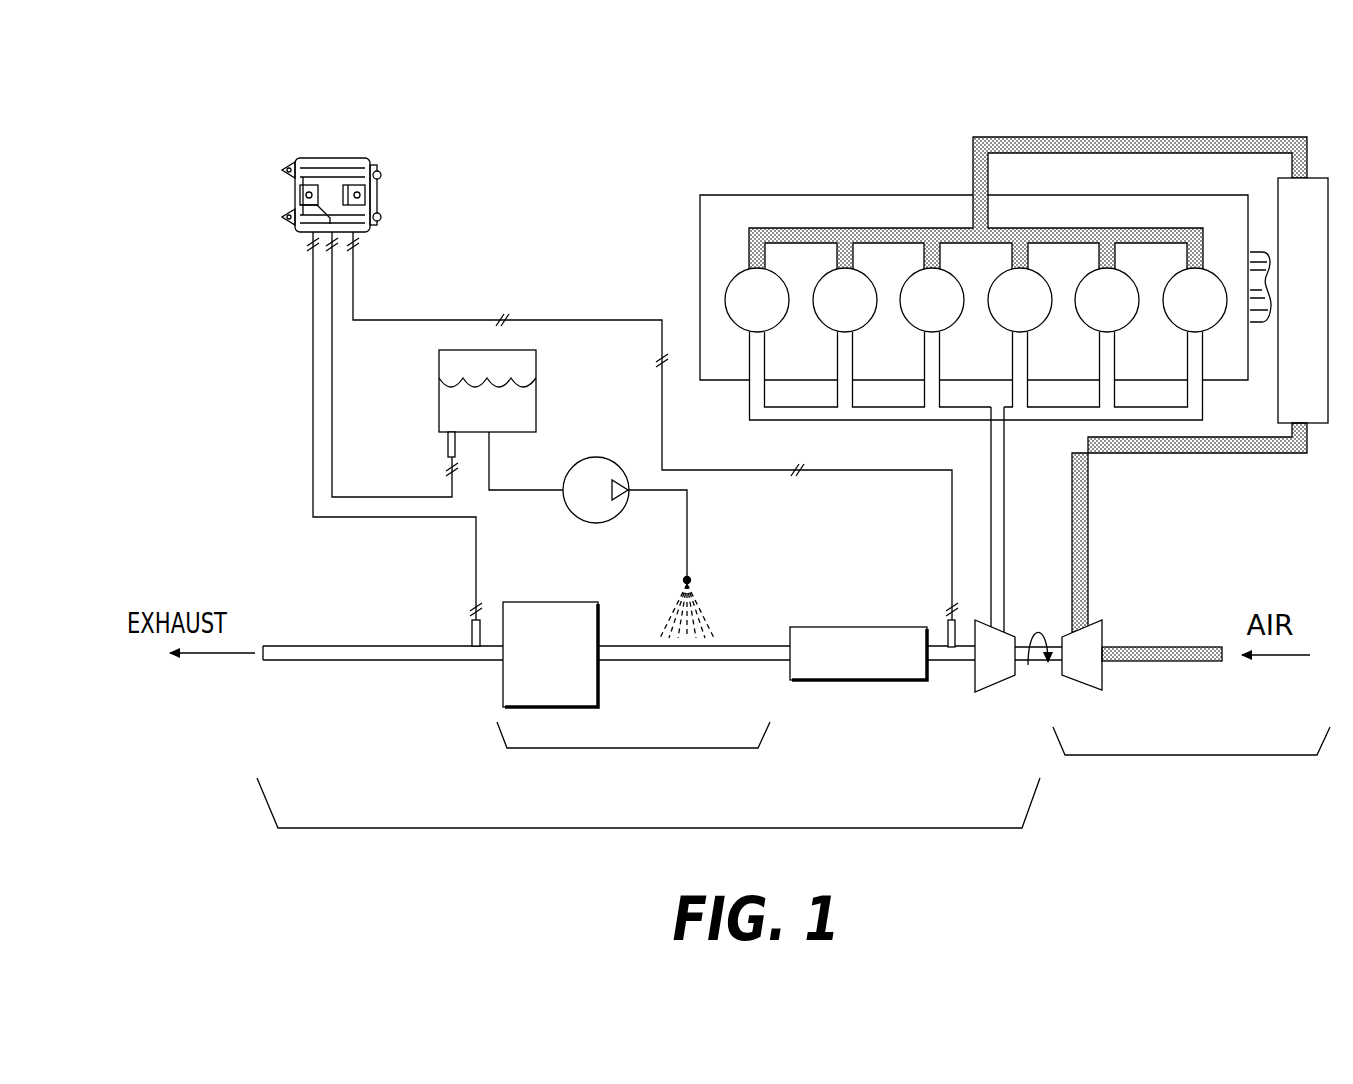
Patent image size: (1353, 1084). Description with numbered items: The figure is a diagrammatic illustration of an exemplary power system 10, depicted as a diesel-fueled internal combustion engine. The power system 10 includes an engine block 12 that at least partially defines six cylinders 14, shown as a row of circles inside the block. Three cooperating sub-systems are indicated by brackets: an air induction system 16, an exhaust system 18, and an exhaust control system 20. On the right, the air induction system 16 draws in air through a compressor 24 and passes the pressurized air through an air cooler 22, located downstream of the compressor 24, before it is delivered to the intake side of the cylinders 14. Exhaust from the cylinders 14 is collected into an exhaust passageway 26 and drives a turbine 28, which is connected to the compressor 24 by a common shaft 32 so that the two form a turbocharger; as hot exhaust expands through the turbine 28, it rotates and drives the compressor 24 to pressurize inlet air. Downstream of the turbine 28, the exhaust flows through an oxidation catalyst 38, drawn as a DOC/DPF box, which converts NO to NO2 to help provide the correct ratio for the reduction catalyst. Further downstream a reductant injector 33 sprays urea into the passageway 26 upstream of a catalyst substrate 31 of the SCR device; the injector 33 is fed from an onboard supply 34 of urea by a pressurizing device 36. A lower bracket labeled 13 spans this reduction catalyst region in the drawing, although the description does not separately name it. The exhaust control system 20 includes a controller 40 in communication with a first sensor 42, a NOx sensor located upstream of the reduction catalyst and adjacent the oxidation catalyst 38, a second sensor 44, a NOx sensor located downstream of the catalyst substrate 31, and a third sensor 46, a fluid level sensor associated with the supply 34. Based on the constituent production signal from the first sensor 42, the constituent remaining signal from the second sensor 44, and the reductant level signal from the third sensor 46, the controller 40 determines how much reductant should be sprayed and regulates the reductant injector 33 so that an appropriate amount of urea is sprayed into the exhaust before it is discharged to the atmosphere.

The power system 10 is at (225, 131).
The engine block 12 is at (765, 195).
The aftertreatment system 13 is at (653, 750).
The cylinders 14 is at (1206, 313).
The air induction system 16 is at (1213, 757).
The exhaust system 18 is at (527, 830).
The exhaust control system 20 is at (152, 458).
The air cooler 22 is at (1291, 292).
The compressor 24 is at (1104, 632).
The exhaust passageway 26 is at (990, 455).
The turbine 28 is at (993, 692).
The catalyst substrate 31 is at (563, 602).
The common shaft 32 is at (1023, 648).
The reductant injector 33 is at (695, 580).
The supply 34 is at (537, 413).
The pressurizing device 36 is at (580, 503).
The oxidation catalyst 38 is at (930, 626).
The controller 40 is at (333, 160).
The first sensor 42 is at (955, 630).
The second sensor 44 is at (470, 628).
The third sensor 46 is at (447, 447).